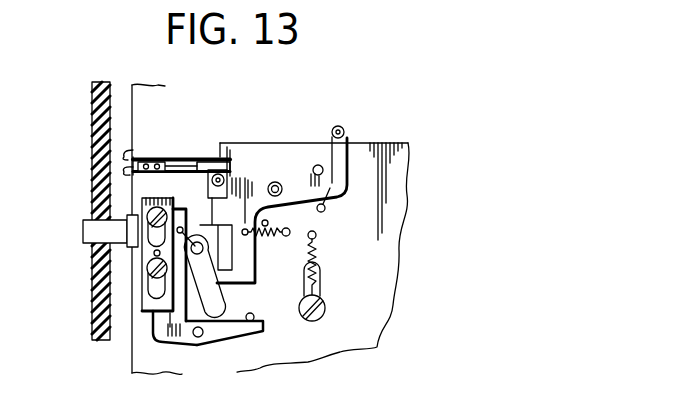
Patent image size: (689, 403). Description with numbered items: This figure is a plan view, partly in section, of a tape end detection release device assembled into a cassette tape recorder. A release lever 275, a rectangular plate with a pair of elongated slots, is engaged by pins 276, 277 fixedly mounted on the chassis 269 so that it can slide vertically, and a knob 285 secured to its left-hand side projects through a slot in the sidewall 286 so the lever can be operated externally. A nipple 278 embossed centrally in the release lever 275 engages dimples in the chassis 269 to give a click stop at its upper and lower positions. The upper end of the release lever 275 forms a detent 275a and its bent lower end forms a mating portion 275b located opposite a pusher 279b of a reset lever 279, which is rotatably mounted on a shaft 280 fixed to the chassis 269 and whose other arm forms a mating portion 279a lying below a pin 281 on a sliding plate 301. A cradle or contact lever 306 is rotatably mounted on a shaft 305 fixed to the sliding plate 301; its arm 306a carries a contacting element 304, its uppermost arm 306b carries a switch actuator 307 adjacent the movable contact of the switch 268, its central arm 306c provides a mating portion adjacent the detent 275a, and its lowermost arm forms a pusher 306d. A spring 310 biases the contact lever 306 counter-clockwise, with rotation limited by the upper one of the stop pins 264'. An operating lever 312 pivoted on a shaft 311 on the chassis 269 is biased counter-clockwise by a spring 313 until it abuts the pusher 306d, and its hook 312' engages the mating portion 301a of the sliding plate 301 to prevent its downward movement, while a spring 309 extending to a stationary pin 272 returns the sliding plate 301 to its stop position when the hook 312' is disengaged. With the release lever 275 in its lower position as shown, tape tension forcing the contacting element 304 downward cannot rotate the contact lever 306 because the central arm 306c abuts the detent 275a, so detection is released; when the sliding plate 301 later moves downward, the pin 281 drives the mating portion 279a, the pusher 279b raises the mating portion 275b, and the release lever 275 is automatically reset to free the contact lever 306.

The sliding plate 301 is at (398, 161).
The mating portion 301a is at (187, 328).
The sidewall 286 is at (93, 152).
The chassis 269 is at (137, 106).
The knob 285 is at (83, 231).
The release lever 275 is at (148, 265).
The detent 275a is at (177, 206).
The mating portion 275b is at (140, 302).
The pin 276 is at (150, 210).
The pin 277 is at (142, 300).
The nipple 278 is at (154, 255).
The reset lever 279 is at (160, 374).
The mating portion 279a is at (258, 338).
The pusher 279b is at (153, 318).
The shaft 280 is at (190, 334).
The pin 281 is at (257, 327).
The stop pins 264' is at (345, 200).
The switch 268 is at (150, 158).
The stationary pin 272 is at (322, 303).
The contacting element 304 is at (338, 126).
The shaft 305 is at (276, 181).
The contact lever 306 is at (317, 168).
The arm 306a is at (350, 140).
The uppermost arm 306b is at (212, 168).
The central arm 306c is at (292, 172).
The pusher 306d is at (222, 276).
The switch actuator 307 is at (219, 173).
The spring 309 is at (316, 252).
The spring 310 is at (272, 220).
The shaft 311 is at (195, 208).
The operating lever 312 is at (236, 276).
The hook 312' is at (234, 275).
The spring 313 is at (230, 255).